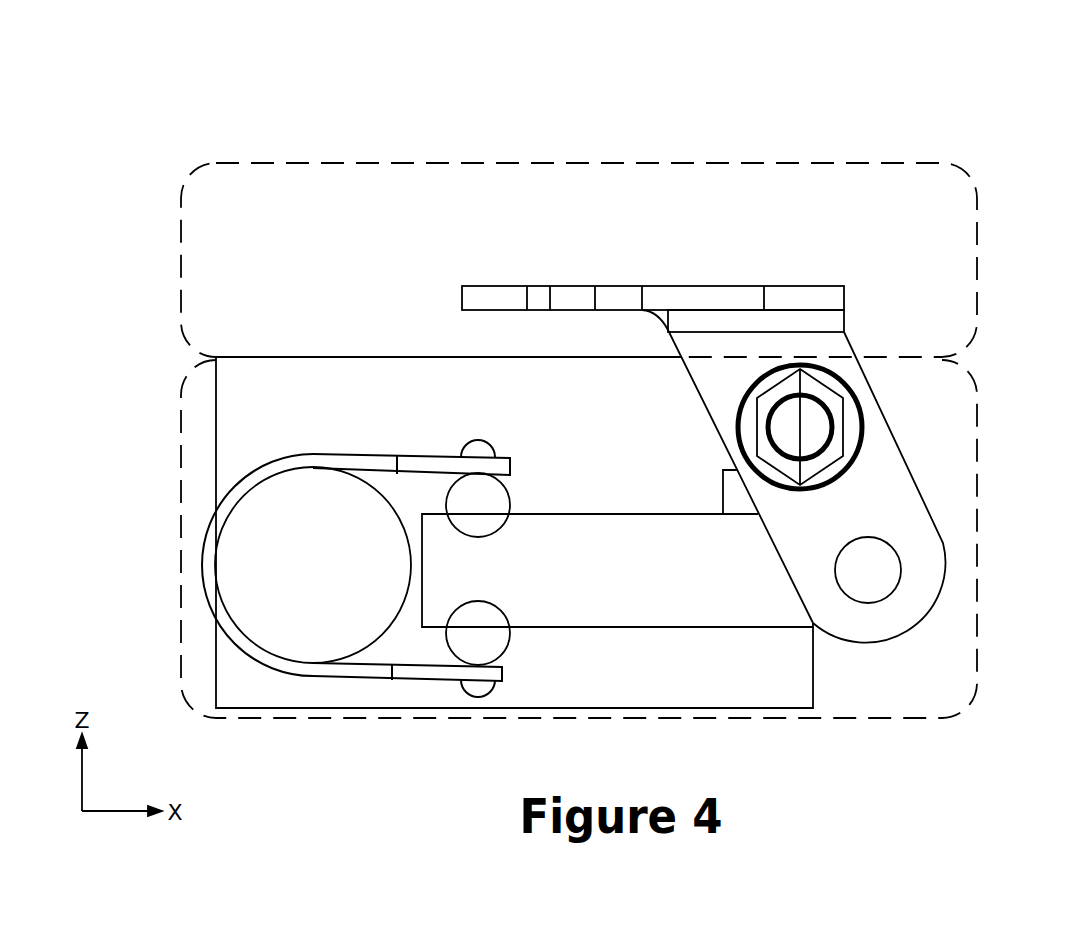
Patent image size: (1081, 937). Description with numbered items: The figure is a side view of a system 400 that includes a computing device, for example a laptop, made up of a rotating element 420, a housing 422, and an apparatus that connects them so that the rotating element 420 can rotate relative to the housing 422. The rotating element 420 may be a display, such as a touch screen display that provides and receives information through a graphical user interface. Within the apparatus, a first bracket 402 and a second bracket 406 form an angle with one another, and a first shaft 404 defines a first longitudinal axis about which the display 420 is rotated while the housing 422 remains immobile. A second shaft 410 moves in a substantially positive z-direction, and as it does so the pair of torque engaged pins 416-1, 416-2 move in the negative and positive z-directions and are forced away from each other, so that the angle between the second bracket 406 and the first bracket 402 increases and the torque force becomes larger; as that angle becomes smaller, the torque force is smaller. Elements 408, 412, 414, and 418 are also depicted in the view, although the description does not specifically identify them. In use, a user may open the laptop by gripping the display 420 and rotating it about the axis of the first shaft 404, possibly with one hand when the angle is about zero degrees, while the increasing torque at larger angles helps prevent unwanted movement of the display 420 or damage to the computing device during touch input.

The system 400 is at (284, 66).
The first bracket 402 is at (620, 287).
The first shaft 404 is at (806, 427).
The second bracket 406 is at (213, 397).
The guide block 408 is at (627, 514).
The second shaft 410 is at (880, 573).
The lower guide block 412 is at (500, 613).
The belt 414 is at (272, 680).
The torque engaged pin 416-1 is at (492, 640).
The torque engaged pin 416-2 is at (492, 503).
The pulley wheel 418 is at (273, 573).
The rotating element 420 is at (423, 163).
The housing 422 is at (181, 480).